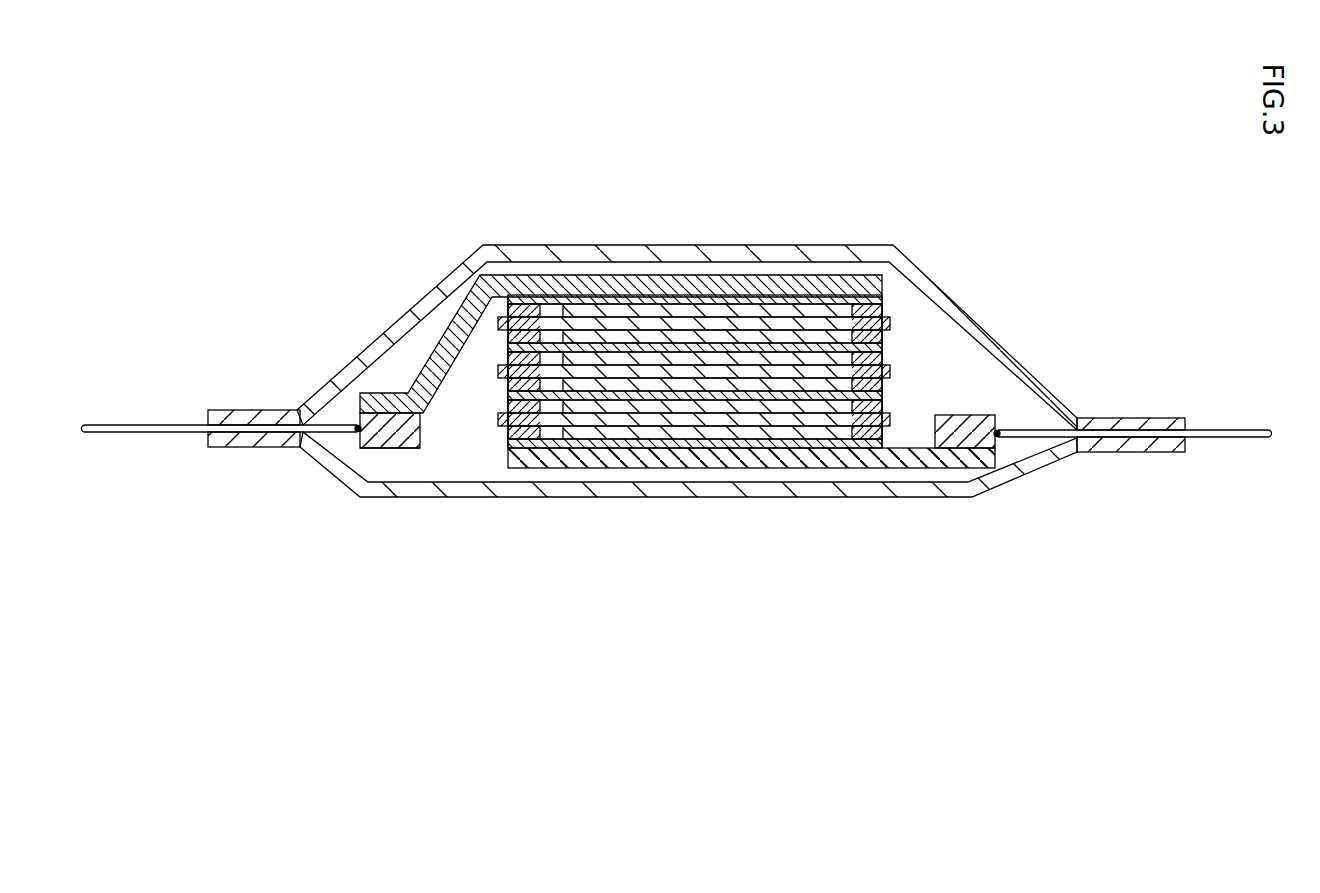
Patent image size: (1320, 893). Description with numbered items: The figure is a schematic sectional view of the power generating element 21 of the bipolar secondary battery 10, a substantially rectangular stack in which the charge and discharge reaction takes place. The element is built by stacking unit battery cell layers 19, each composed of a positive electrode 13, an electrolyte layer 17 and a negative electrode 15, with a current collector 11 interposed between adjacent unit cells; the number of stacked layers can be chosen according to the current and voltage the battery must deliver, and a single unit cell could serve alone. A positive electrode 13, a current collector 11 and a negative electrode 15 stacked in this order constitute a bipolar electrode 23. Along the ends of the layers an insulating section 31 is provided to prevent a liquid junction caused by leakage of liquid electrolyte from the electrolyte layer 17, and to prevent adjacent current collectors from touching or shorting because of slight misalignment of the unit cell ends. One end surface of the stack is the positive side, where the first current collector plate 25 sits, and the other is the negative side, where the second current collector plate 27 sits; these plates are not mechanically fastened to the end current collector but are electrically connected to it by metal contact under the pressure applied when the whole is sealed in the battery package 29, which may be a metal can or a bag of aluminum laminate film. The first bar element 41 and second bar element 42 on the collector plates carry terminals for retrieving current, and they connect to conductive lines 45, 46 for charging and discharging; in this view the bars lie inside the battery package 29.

The bipolar secondary battery 10 is at (340, 186).
The current collector 11 is at (767, 347).
The positive electrode 13 is at (680, 313).
The negative electrode 15 is at (588, 330).
The electrolyte layer 17 is at (633, 322).
The unit battery cell layer 19 is at (575, 180).
The power generating element 21 is at (888, 343).
The bipolar electrode 23 is at (718, 568).
The first current collector plate 25 is at (378, 412).
The second current collector plate 27 is at (947, 470).
The battery package 29 is at (1137, 417).
The insulating section 31 is at (868, 328).
The first bar element 41 is at (378, 449).
The second bar element 42 is at (973, 414).
The conductive line 45 is at (150, 424).
The conductive line 46 is at (1268, 429).